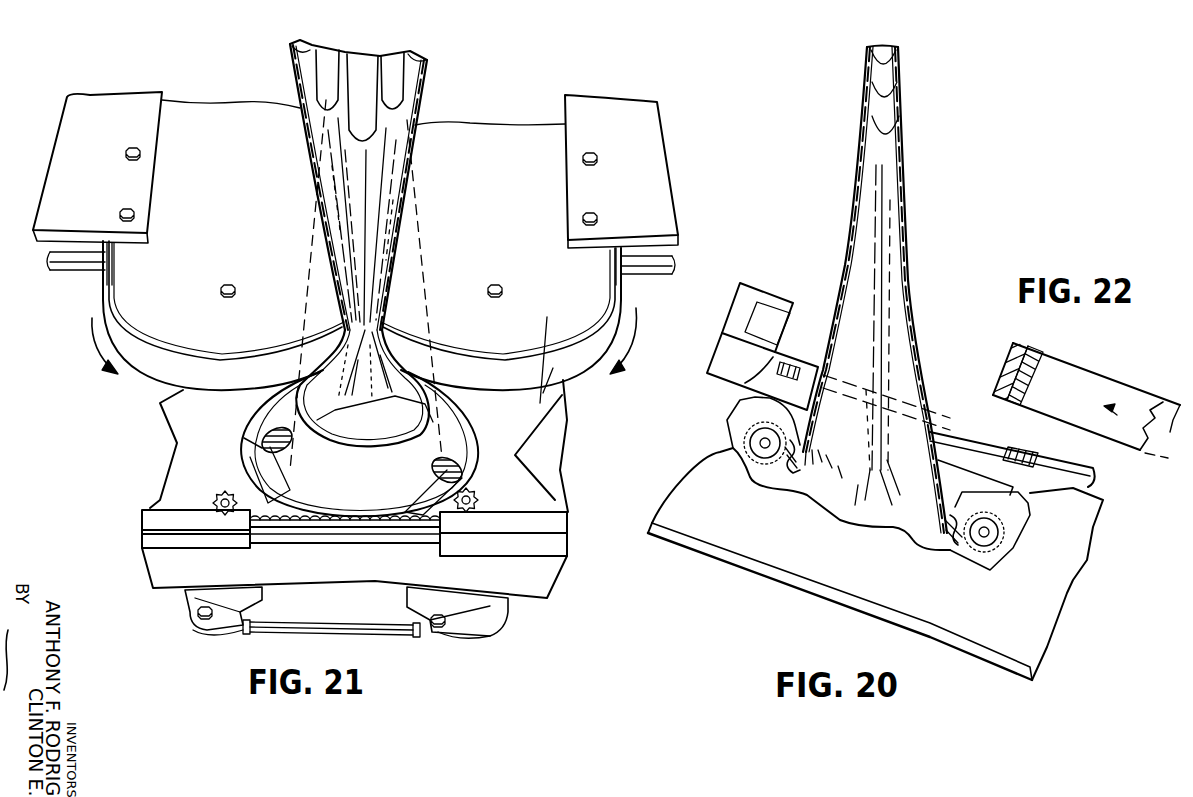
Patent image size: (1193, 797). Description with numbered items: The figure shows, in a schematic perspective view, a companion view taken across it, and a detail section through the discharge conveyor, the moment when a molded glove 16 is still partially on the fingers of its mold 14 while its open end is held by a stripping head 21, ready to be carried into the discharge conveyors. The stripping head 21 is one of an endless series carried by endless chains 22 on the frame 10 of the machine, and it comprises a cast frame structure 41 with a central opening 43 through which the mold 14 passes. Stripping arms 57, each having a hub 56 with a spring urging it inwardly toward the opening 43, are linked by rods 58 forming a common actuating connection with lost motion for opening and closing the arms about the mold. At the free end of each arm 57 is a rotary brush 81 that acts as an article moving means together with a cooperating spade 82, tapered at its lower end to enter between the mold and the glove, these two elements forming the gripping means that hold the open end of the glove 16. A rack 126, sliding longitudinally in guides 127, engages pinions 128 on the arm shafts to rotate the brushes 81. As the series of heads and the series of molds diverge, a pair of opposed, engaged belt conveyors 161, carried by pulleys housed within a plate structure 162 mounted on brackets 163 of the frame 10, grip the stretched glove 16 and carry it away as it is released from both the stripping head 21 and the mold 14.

In FIG. 20, the frame 10 is at (1073, 585).
In FIG. 21, the mold 14 is at (310, 76).
In FIG. 20, the mold 14 is at (891, 104).
In FIG. 21, the glove 16 is at (412, 114).
In FIG. 20, the glove 16 is at (903, 220).
In FIG. 21, the stripping head 21 is at (642, 587).
In FIG. 20, the stripping head 21 is at (772, 251).
In FIG. 21, the endless chain 22 is at (551, 378).
In FIG. 21, the cast frame structure 41 is at (540, 421).
In FIG. 20, the central opening 43 is at (958, 447).
In FIG. 21, the hub 56 is at (188, 595).
In FIG. 21, the stripping arm 57 is at (257, 468).
In FIG. 21, the rod 58 is at (361, 622).
In FIG. 21, the rotary brush 81 is at (266, 442).
In FIG. 20, the rotary brush 81 is at (750, 432).
In FIG. 20, the spade 82 is at (797, 450).
In FIG. 21, the rack 126 is at (366, 543).
In FIG. 20, the rack 126 is at (790, 320).
In FIG. 21, the guide 127 is at (142, 542).
In FIG. 20, the guide 127 is at (768, 284).
In FIG. 21, the pinion 128 is at (214, 498).
In FIG. 21, the belt conveyor 161 is at (150, 349).
In FIG. 22, the belt conveyor 161 is at (996, 372).
In FIG. 21, the plate structure 162 is at (223, 340).
In FIG. 22, the plate structure 162 is at (1033, 353).
In FIG. 21, the bracket 163 is at (56, 152).